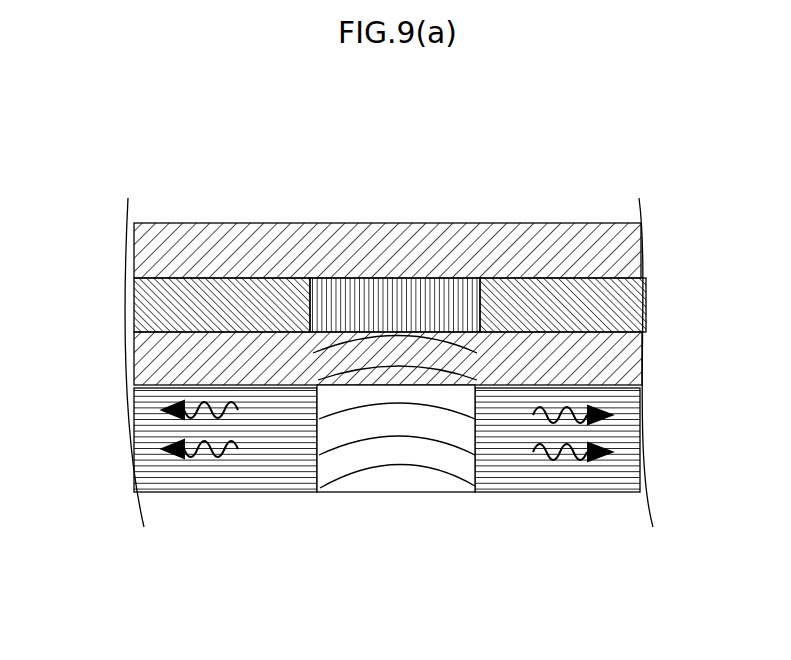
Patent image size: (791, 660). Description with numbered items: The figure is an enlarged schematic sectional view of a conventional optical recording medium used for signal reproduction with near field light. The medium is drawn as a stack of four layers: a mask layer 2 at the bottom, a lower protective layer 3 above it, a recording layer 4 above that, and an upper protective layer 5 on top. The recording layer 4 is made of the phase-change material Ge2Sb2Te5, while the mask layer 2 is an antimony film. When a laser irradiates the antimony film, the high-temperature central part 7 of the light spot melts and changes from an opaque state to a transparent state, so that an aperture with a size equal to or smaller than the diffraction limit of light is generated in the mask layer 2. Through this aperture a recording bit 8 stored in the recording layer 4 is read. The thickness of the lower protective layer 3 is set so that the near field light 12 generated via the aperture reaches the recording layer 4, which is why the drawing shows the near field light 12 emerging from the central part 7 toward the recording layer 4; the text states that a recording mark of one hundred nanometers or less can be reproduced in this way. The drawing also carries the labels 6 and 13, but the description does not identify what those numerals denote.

The mask layer 2 is at (137, 464).
The lower protective layer 3 is at (134, 355).
The recording layer 4 is at (134, 307).
The upper protective layer 5 is at (134, 255).
The light emitting region 6 is at (527, 492).
The central part 7 is at (338, 490).
The recording bit 8 is at (447, 278).
The near field light 12 is at (412, 437).
The guided light 13 is at (203, 452).